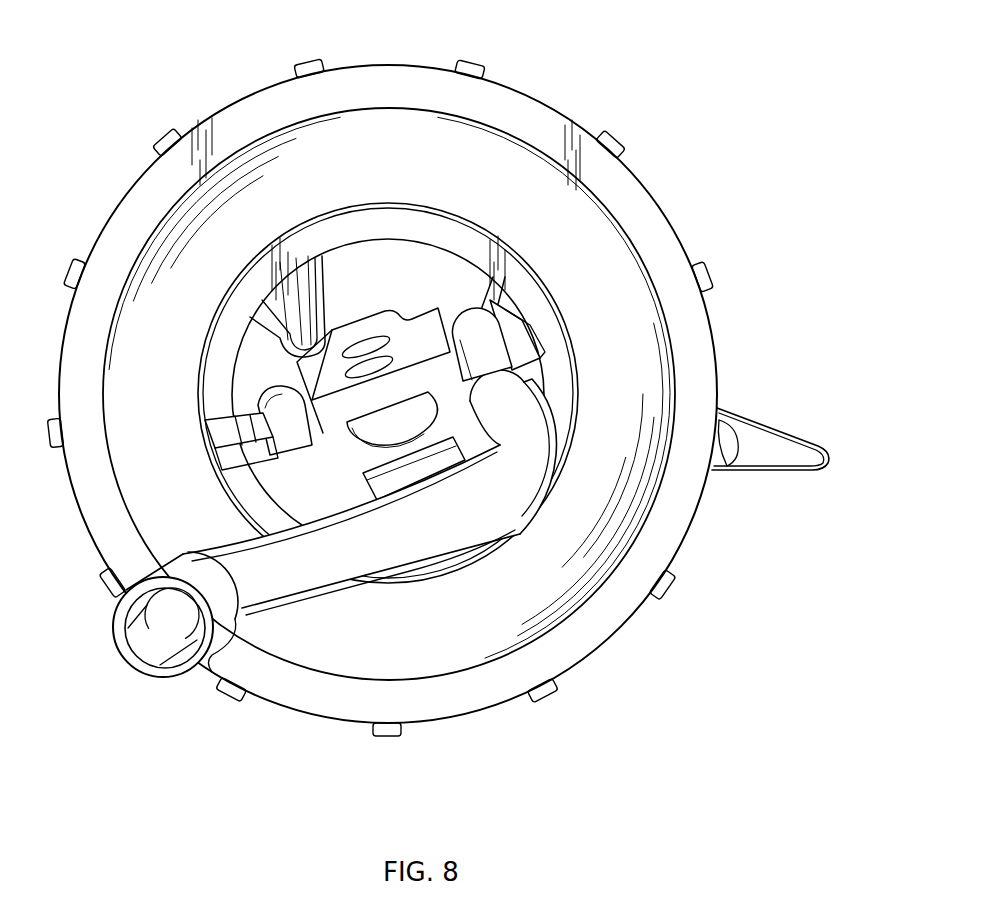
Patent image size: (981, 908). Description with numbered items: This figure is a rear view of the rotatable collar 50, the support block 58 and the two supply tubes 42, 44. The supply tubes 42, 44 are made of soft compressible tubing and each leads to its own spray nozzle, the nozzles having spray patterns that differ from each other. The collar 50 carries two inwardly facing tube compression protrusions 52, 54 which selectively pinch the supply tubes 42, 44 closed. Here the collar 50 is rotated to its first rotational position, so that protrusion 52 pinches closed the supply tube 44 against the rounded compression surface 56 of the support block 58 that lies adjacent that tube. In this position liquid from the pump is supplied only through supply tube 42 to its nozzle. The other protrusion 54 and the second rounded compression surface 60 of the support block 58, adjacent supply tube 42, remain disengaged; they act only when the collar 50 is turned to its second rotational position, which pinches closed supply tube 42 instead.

The supply tube 42 is at (250, 521).
The supply tube 44 is at (497, 505).
The collar 50 is at (636, 186).
The tube compression protrusion 52 is at (494, 303).
The tube compression protrusion 54 is at (274, 306).
The rounded compression surface 56 is at (472, 401).
The support block 58 is at (396, 385).
The rounded compression surface 60 is at (333, 437).